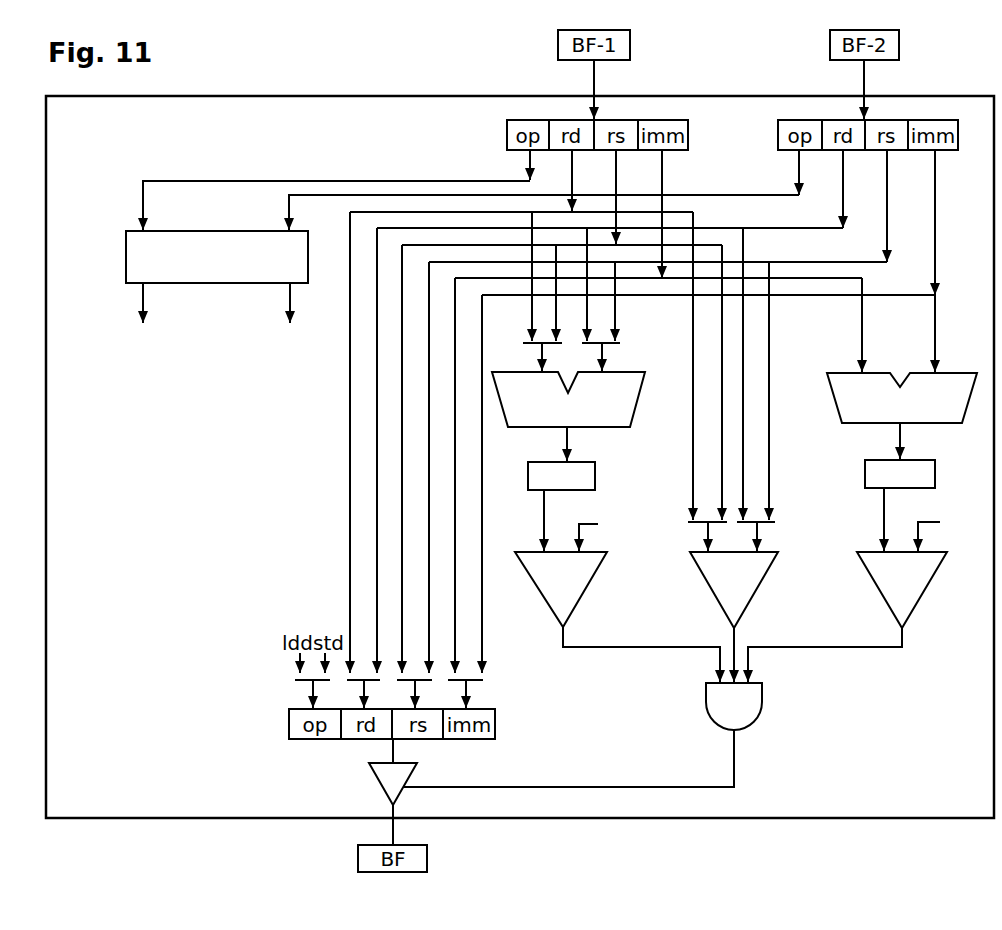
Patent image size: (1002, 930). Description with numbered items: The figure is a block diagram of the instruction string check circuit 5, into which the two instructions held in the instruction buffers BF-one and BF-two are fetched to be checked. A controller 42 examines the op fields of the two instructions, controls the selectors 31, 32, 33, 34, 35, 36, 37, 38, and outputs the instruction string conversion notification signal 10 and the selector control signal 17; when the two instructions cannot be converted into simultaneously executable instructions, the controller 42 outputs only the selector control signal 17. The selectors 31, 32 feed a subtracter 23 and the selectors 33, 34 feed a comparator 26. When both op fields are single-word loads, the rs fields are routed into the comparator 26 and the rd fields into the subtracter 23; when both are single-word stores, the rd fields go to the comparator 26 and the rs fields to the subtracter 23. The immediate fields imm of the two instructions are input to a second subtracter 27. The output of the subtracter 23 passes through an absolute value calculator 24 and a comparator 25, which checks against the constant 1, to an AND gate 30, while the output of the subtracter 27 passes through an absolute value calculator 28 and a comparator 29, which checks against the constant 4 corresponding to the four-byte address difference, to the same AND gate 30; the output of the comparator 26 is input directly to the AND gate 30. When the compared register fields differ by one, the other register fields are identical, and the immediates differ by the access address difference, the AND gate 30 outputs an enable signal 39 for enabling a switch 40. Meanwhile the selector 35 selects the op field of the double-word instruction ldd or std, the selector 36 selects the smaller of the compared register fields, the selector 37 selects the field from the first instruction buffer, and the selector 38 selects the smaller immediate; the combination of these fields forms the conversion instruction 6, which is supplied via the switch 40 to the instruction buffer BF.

The instruction string check circuit 5 is at (250, 96).
The controller 42 is at (213, 229).
The instruction string conversion notification signal 10 is at (146, 297).
The selector control signal 17 is at (292, 297).
The selector 31 is at (523, 343).
The selector 32 is at (620, 343).
The subtracter 23 is at (630, 425).
The absolute value calculator 24 is at (595, 478).
The constant one 1 is at (595, 533).
The comparator 25 is at (540, 593).
The selector 33 is at (688, 522).
The selector 34 is at (775, 522).
The comparator 26 is at (712, 592).
The subtracter 27 is at (838, 412).
The absolute value calculator 28 is at (863, 488).
The constant four 4 is at (936, 533).
The comparator 29 is at (884, 590).
The AND gate 30 is at (706, 707).
The enable signal 39 is at (508, 786).
The selector 35 is at (330, 680).
The selector 36 is at (380, 680).
The selector 37 is at (432, 680).
The selector 38 is at (483, 680).
The switch 40 is at (376, 779).
The conversion instruction 6 is at (393, 831).